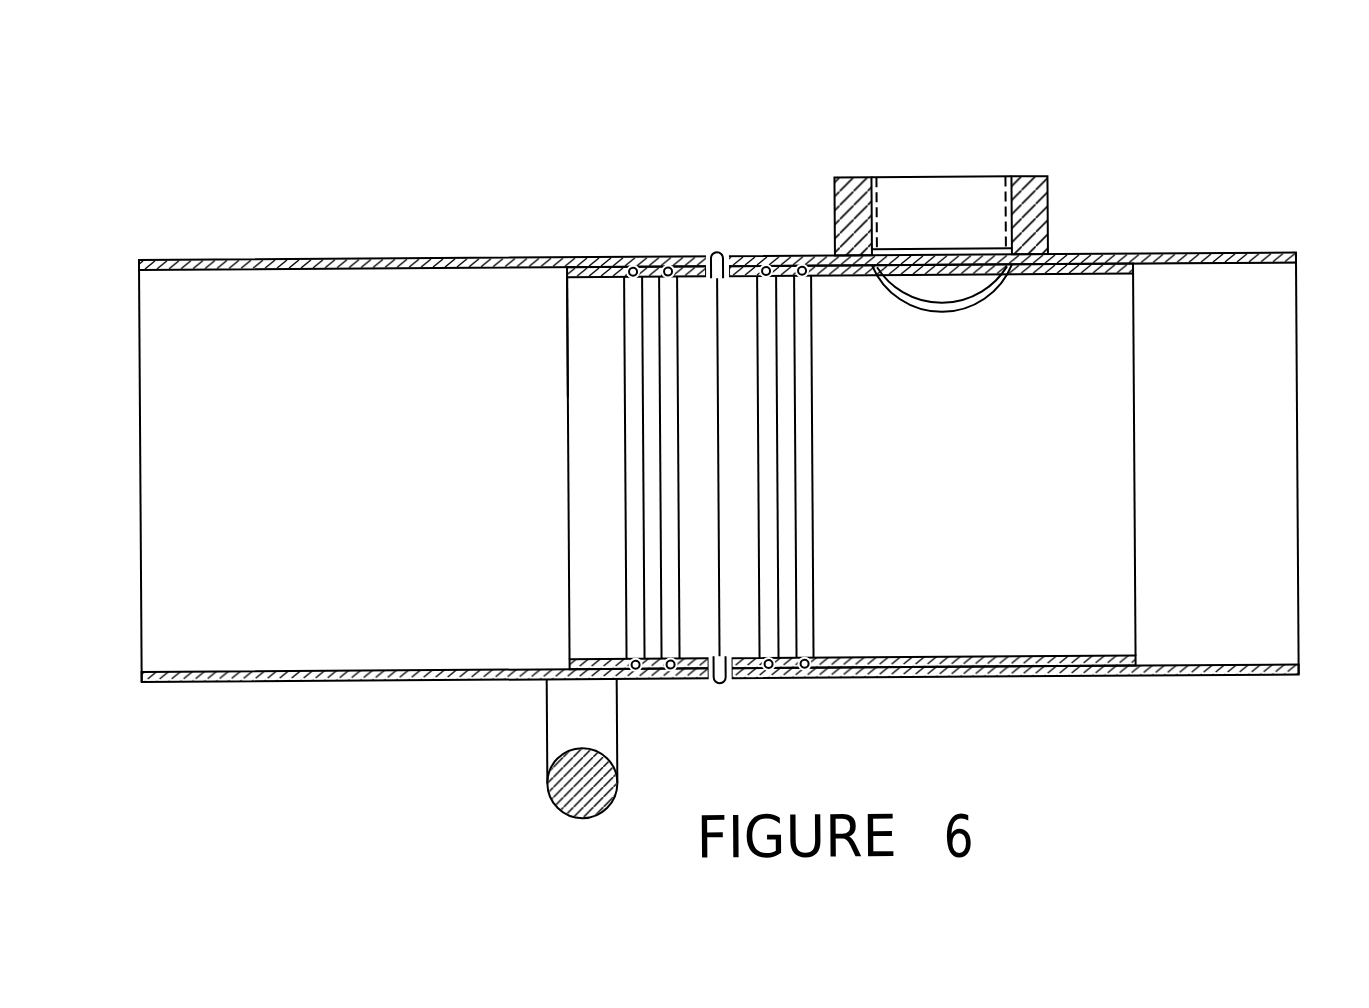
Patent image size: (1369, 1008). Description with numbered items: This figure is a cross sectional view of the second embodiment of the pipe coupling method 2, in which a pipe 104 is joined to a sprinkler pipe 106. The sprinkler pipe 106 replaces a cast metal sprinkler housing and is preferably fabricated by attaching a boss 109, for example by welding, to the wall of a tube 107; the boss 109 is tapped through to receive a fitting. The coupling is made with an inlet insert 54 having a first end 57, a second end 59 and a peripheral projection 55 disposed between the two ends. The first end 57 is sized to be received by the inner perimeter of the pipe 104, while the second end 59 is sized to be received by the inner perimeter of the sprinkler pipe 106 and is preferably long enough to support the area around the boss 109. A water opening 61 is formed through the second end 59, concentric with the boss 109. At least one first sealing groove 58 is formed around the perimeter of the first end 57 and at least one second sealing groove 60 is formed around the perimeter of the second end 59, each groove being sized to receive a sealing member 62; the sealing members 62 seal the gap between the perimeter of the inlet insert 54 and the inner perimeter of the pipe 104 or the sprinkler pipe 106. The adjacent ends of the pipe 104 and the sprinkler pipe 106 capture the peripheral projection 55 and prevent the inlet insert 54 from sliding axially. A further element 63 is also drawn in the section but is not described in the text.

The pipe coupling method 2 is at (401, 167).
The inlet insert 54 is at (704, 421).
The peripheral projection 55 is at (713, 266).
The first end 57 is at (586, 571).
The first sealing groove 58 is at (584, 275).
The second end 59 is at (1008, 623).
The second sealing groove 60 is at (825, 520).
The water opening 61 is at (943, 277).
The sealing member 62 is at (672, 268).
The drain pipe 63 is at (579, 798).
The pipe 104 is at (284, 684).
The sprinkler pipe 106 is at (1197, 337).
The tube 107 is at (1194, 684).
The boss 109 is at (1050, 218).